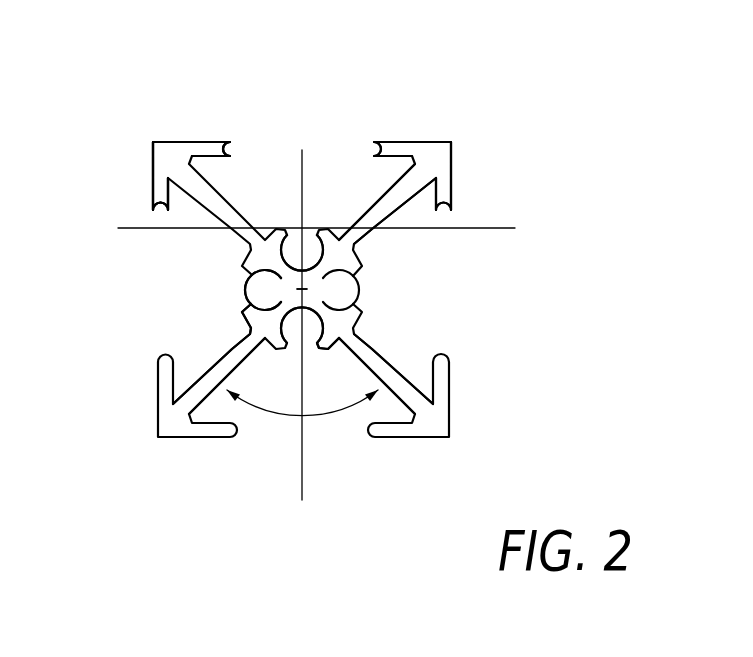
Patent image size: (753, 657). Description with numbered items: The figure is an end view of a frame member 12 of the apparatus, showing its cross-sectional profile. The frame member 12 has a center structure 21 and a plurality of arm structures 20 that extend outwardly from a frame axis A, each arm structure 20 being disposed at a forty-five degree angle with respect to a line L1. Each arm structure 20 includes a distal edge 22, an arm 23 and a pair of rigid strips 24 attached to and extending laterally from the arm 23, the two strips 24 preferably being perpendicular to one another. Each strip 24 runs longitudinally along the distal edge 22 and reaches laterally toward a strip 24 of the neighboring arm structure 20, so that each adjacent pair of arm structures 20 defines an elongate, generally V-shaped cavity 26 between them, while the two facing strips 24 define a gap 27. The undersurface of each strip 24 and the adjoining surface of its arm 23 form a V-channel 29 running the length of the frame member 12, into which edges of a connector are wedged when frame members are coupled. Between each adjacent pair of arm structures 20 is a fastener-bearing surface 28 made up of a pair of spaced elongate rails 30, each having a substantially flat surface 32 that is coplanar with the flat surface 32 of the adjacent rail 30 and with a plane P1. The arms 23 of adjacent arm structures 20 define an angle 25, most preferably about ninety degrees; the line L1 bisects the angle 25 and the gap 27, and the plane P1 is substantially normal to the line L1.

The frame member 12 is at (478, 127).
The arm structure 20 is at (175, 142).
The center structure 21 is at (318, 289).
The distal edge 22 is at (158, 141).
The arm 23 is at (392, 205).
The rigid strip 24 is at (222, 142).
The angle 25 is at (327, 416).
The V-shaped cavity 26 is at (215, 262).
The gap 27 is at (195, 332).
The fastener-bearing surface 28 is at (284, 232).
The V-channel 29 is at (425, 184).
The rail 30 is at (279, 350).
The flat surface 32 is at (318, 361).
The frame axis A is at (296, 289).
The plane P1 is at (335, 237).
The line L1 is at (322, 338).